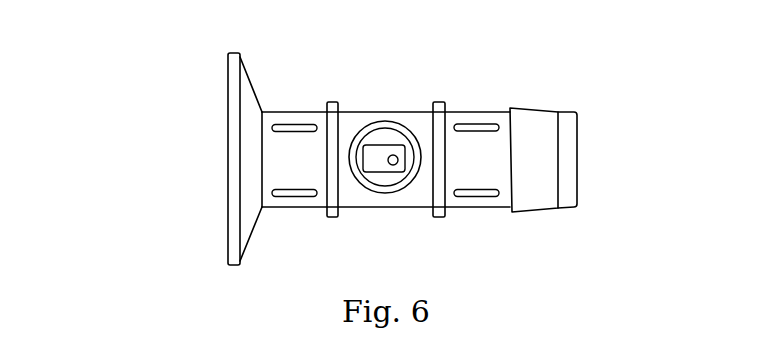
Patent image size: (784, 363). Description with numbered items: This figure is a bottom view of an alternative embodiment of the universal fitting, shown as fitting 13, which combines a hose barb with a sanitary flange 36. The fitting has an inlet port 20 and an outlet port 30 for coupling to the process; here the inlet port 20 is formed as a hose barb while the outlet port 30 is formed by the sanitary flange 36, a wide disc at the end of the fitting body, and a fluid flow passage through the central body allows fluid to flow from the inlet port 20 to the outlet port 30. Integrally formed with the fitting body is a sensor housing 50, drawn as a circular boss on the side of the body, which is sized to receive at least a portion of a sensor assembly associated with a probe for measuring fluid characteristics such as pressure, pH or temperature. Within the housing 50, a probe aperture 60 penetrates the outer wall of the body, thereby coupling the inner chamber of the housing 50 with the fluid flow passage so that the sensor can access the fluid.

The fitting 13 is at (172, 285).
The inlet port 20 is at (578, 126).
The outlet port 30 is at (228, 150).
The sanitary flange 36 is at (250, 82).
The sensor housing 50 is at (365, 188).
The probe aperture 60 is at (393, 165).